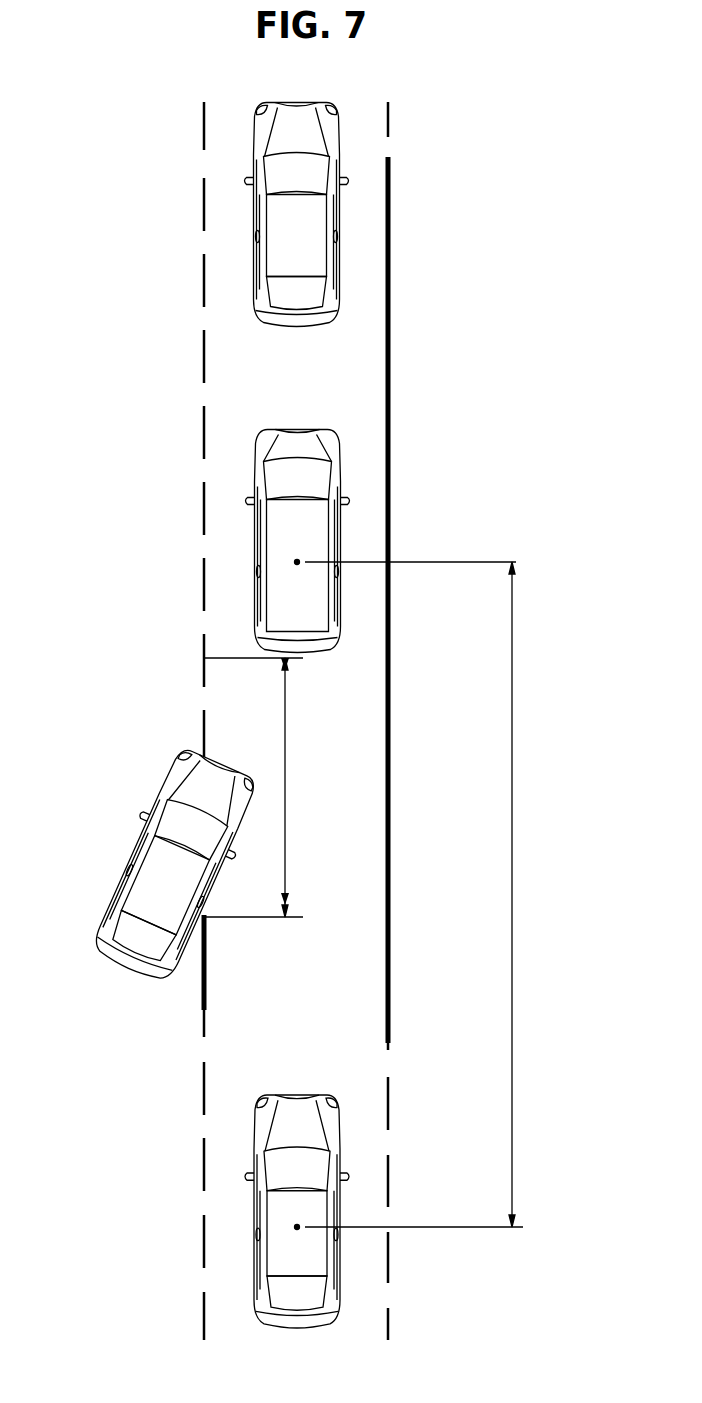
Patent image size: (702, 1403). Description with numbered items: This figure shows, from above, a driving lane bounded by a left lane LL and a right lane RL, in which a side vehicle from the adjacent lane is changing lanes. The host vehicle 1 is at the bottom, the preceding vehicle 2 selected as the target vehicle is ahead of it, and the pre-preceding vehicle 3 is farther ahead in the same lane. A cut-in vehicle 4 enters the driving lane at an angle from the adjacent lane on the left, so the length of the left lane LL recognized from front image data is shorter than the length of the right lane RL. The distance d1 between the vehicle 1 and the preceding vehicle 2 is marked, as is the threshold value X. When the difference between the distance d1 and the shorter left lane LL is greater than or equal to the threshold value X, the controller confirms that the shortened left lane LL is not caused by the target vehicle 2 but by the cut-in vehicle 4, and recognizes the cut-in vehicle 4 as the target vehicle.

The vehicle 1 is at (328, 1268).
The preceding vehicle 2 is at (337, 487).
The pre-preceding vehicle 3 is at (340, 214).
The cut-in vehicle 4 is at (122, 883).
The right lane RL is at (393, 903).
The left lane LL is at (208, 958).
The threshold value X is at (258, 787).
The distance between the vehicle and the preceding vehicle d1 is at (422, 895).